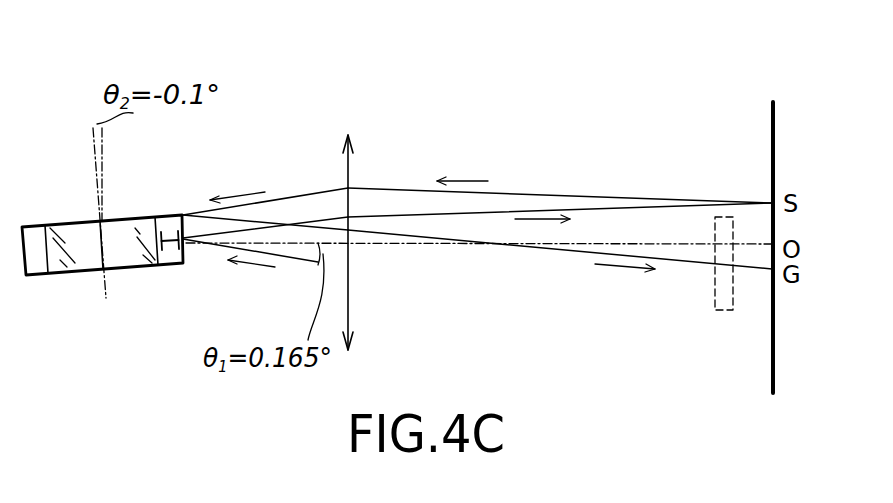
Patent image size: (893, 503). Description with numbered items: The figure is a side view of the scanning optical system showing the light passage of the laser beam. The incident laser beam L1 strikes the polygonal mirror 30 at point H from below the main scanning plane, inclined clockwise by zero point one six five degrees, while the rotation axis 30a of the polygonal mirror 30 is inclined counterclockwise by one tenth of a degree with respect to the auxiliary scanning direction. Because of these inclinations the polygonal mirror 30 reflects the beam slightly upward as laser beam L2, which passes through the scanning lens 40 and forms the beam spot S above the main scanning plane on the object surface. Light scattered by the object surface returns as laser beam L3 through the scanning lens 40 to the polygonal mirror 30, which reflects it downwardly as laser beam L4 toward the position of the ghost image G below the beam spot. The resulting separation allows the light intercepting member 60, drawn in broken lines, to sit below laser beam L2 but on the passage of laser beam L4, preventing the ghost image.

The polygonal mirror 30 is at (70, 274).
The rotation axis of the polygonal mirror 30a is at (103, 195).
The scanning lens 40 is at (350, 170).
The light intercepting member 60 is at (730, 216).
The incident laser beam L1 is at (287, 264).
The laser beam forming the beam spot L2 is at (490, 213).
The scattered laser beam returning to the polygonal mirror L3 is at (518, 193).
The laser beam forming the ghost image L4 is at (577, 252).